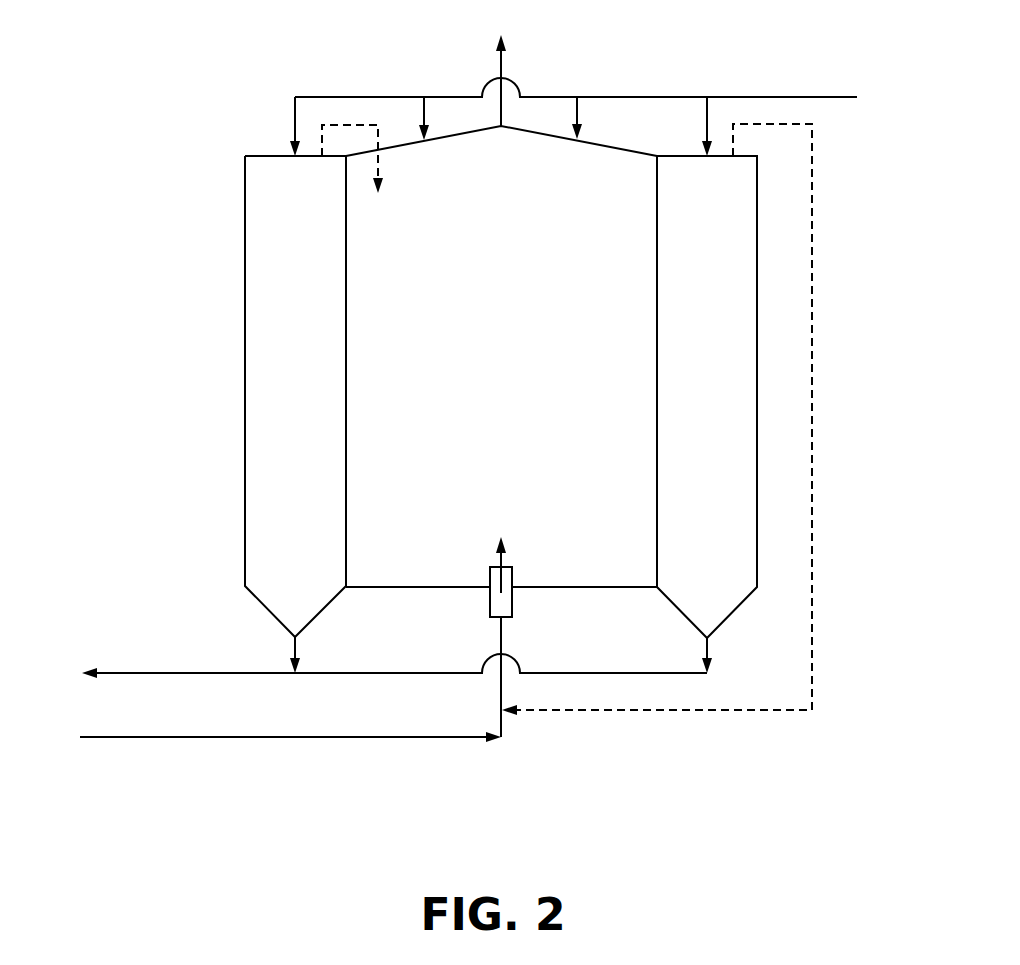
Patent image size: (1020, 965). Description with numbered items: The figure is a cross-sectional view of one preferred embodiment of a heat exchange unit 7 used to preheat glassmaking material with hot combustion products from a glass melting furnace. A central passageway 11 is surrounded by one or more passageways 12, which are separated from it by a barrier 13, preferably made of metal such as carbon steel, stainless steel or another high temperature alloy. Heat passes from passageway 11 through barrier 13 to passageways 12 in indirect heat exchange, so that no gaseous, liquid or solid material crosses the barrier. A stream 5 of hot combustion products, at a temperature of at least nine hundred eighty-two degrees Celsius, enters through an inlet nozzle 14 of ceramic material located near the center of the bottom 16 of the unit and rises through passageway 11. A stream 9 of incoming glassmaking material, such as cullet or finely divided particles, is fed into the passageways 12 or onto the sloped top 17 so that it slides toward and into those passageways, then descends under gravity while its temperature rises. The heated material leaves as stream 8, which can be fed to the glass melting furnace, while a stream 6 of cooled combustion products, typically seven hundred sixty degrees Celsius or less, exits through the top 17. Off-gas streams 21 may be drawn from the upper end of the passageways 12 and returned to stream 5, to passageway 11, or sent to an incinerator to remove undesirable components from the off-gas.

The stream of hot combustion products 5 is at (353, 737).
The stream of cooled combustion products 6 is at (503, 69).
The heat exchange unit 7 is at (212, 287).
The stream of heated glassmaking material 8 is at (215, 672).
The stream of incoming glassmaking material 9 is at (380, 97).
The passageway 11 is at (495, 344).
The passageways 12 is at (312, 344).
The barrier 13 is at (345, 250).
The inlet nozzle 14 is at (512, 578).
The bottom 16 is at (403, 586).
The top 17 is at (458, 133).
The off-gas streams 21 is at (342, 125).